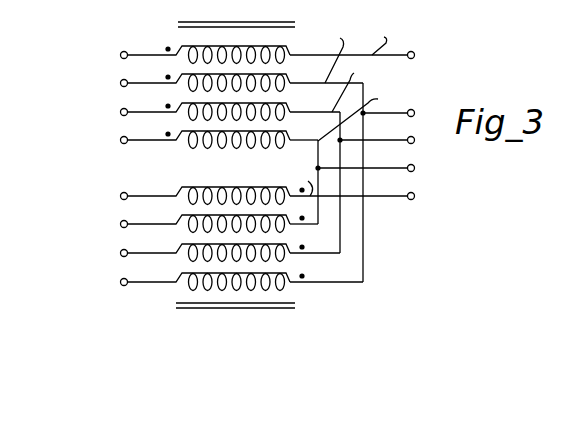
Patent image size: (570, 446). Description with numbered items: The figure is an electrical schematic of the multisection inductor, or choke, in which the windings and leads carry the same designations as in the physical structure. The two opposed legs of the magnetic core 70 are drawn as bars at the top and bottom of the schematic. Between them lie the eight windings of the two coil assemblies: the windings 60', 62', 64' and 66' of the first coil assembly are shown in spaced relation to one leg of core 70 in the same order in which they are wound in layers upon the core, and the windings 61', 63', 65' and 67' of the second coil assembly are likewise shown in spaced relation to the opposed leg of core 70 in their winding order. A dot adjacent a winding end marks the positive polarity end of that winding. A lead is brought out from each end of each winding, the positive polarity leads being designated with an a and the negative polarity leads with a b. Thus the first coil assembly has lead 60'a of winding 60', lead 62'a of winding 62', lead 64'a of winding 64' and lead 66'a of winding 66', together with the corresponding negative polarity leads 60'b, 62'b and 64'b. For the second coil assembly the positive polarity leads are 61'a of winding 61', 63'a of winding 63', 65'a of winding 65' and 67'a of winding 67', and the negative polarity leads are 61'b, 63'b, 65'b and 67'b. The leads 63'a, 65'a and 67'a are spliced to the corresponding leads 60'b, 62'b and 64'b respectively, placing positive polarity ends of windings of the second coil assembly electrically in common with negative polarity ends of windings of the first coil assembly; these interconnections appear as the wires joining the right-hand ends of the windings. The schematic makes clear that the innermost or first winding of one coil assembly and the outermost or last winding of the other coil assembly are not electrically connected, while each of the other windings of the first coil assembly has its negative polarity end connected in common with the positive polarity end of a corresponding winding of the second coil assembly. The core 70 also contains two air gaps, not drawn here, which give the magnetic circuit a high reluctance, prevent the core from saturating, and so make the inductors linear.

The core 70 is at (256, 21).
The winding 60' is at (267, 48).
The winding 62' is at (245, 76).
The winding 64' is at (234, 105).
The winding 66' is at (228, 133).
The winding 67' is at (267, 185).
The winding 65' is at (223, 218).
The winding 63' is at (234, 247).
The winding 61' is at (245, 276).
The lead 60'a is at (128, 40).
The lead 62'a is at (102, 74).
The lead 64'a is at (102, 103).
The lead 66'a is at (245, 116).
The lead 67'b is at (145, 183).
The lead 65'b is at (99, 215).
The lead 63'b is at (99, 244).
The lead 61'b is at (99, 273).
The lead 60'b is at (396, 41).
The lead 62'b is at (348, 52).
The lead 64'b is at (362, 87).
The lead 67'a is at (343, 181).
The lead 65'a is at (364, 182).
The lead 63'a is at (375, 183).
The lead 61'a is at (386, 185).